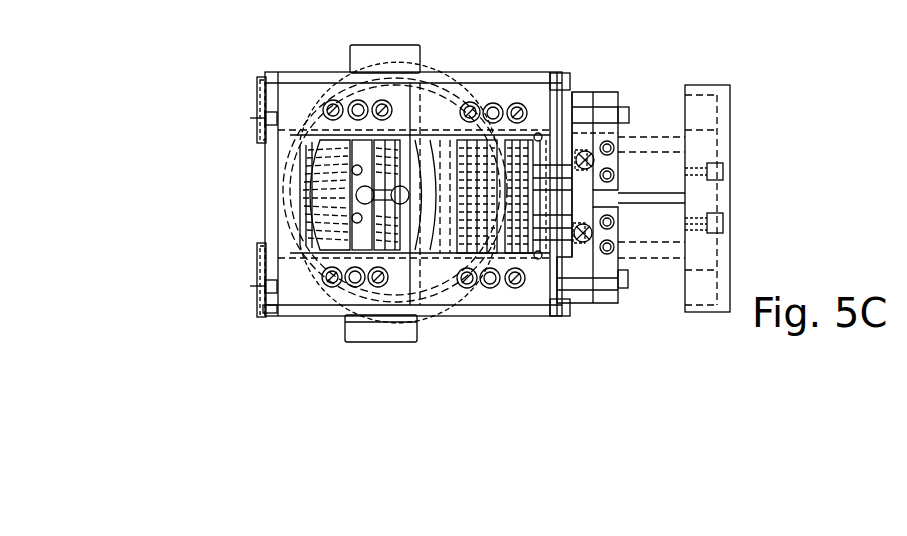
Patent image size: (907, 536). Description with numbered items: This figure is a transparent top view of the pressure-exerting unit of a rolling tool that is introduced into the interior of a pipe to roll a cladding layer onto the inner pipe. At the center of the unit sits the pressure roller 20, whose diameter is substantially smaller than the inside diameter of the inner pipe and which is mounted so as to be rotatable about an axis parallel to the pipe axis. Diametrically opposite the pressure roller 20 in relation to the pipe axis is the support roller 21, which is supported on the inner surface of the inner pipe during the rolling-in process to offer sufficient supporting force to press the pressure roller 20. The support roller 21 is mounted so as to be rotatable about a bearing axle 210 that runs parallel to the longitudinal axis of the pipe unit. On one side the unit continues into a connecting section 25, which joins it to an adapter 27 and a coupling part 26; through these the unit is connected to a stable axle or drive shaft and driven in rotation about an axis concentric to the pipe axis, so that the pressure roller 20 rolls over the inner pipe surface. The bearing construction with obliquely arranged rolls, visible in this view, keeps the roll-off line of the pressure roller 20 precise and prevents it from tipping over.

The pressure roller 20 is at (430, 130).
The support roller 21 is at (362, 58).
The bearing axle 210 is at (262, 115).
The connecting section 25 is at (660, 88).
The coupling part 26 is at (730, 110).
The adapter 27 is at (598, 88).